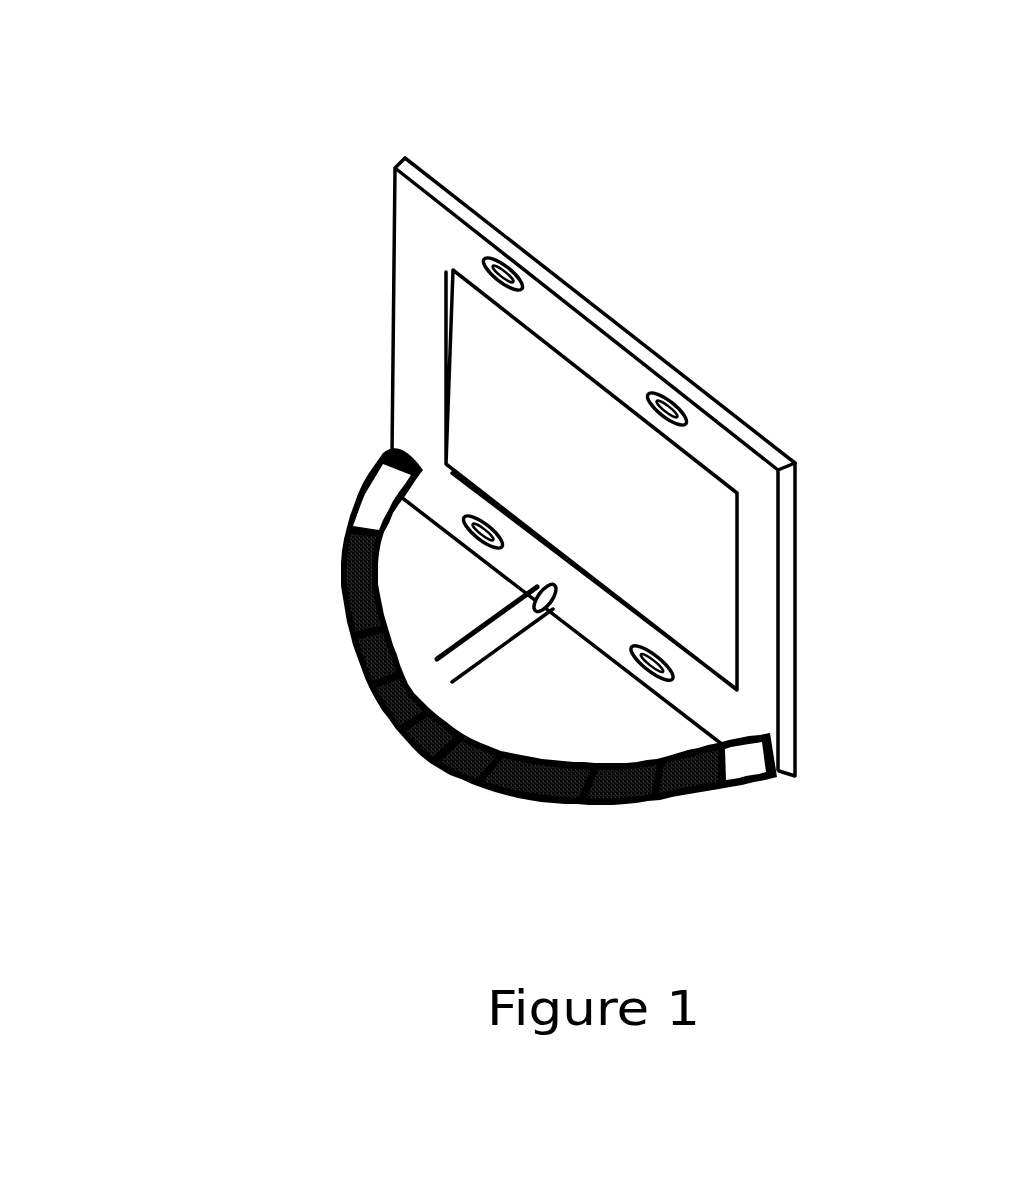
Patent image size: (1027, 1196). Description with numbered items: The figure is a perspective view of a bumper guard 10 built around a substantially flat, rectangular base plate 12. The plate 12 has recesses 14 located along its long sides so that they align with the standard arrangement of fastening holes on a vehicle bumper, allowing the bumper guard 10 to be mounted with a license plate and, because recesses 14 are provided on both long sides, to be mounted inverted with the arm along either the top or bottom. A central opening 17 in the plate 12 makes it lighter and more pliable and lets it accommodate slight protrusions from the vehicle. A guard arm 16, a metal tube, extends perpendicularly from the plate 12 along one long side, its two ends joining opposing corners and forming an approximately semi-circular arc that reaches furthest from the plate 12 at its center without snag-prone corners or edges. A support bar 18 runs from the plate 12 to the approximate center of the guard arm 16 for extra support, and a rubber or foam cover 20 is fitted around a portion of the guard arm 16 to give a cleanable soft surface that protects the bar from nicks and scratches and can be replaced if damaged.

The bumper guard 10 is at (130, 115).
The base plate 12 is at (790, 605).
The recess 14 is at (523, 260).
The guard arm 16 is at (763, 777).
The central opening 17 is at (580, 433).
The support bar 18 is at (477, 653).
The cover 20 is at (643, 780).